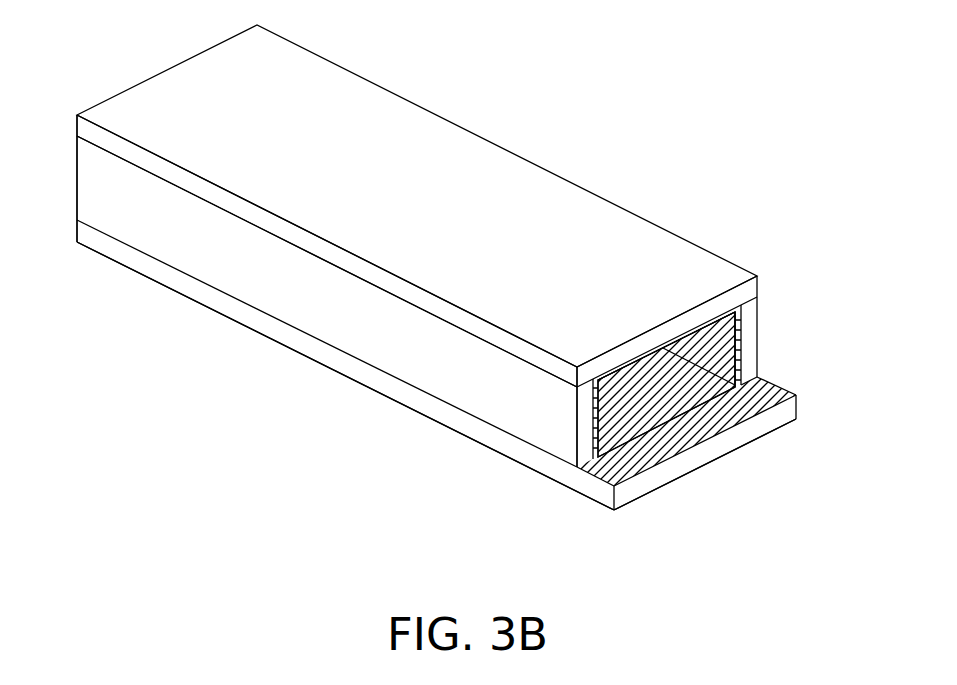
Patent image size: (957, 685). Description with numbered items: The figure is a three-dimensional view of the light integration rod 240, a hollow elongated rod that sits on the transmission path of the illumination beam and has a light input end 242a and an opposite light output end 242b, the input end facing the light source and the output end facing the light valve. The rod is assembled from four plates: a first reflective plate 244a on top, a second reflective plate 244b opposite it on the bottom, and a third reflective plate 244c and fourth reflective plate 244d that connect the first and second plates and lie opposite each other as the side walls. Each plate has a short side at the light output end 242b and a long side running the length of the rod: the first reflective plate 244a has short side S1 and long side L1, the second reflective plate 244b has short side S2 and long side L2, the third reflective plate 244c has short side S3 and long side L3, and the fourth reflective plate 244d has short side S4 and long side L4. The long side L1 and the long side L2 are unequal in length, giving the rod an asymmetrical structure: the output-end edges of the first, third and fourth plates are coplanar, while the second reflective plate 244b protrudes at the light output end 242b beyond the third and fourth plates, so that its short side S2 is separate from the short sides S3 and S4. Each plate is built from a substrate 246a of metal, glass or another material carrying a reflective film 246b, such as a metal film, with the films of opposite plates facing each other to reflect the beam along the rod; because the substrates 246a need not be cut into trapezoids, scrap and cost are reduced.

The light integration rod 240 is at (862, 549).
The light input end 242a is at (461, 287).
The light output end 242b is at (757, 374).
The first reflective plate 244a is at (673, 252).
The second reflective plate 244b is at (740, 434).
The third reflective plate 244c is at (513, 406).
The fourth reflective plate 244d is at (750, 335).
The substrate 246a is at (715, 310).
The reflective film 246b is at (741, 319).
The short side S1 is at (640, 335).
The short side S2 is at (668, 484).
The short side S3 is at (577, 411).
The short side S4 is at (713, 354).
The long side L1 is at (327, 240).
The long side L2 is at (232, 318).
The long side L3 is at (217, 207).
The long side L4 is at (706, 372).